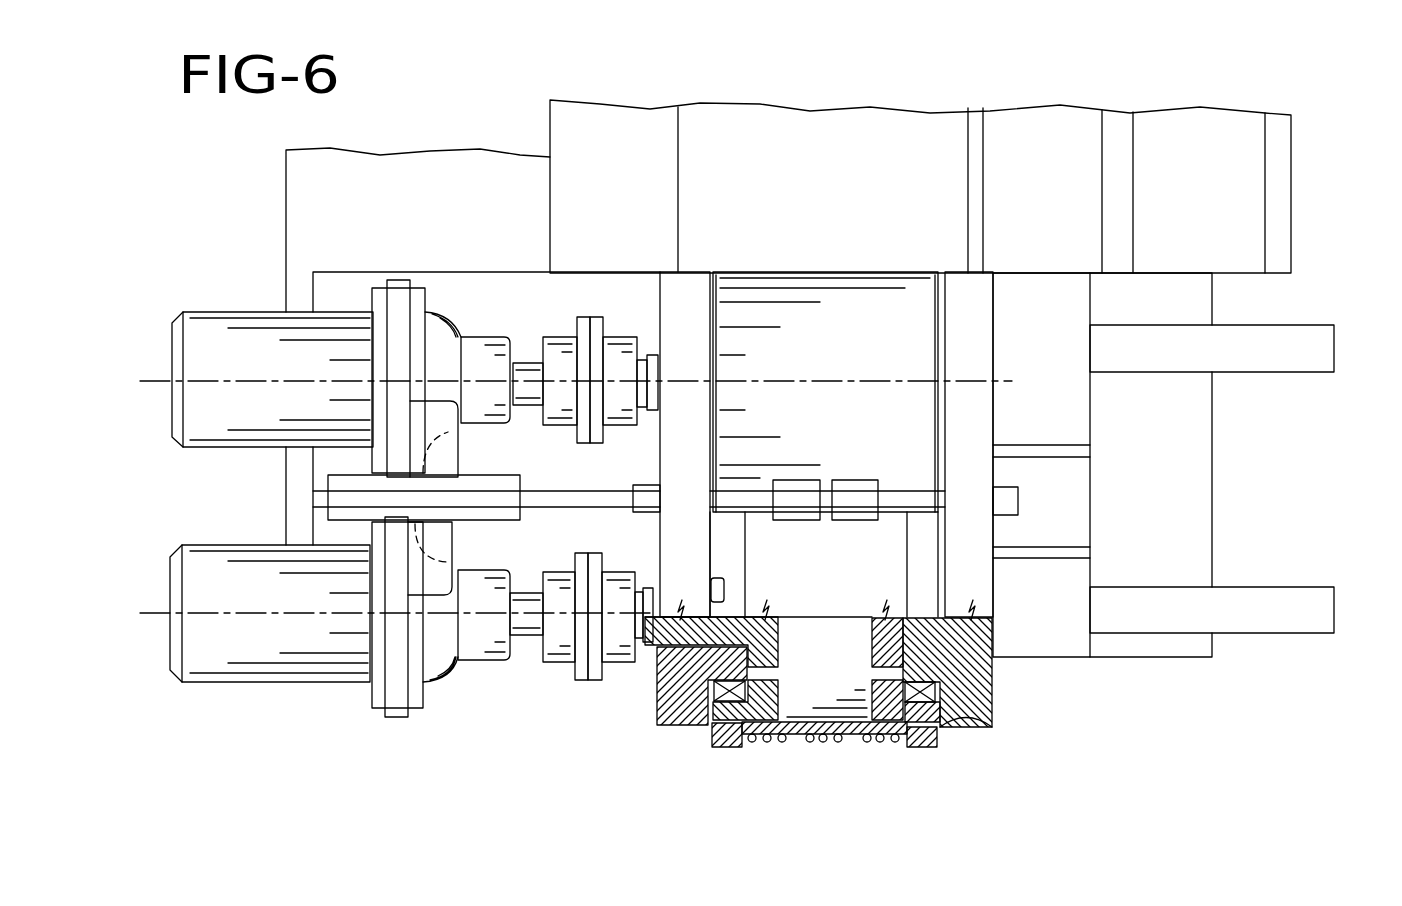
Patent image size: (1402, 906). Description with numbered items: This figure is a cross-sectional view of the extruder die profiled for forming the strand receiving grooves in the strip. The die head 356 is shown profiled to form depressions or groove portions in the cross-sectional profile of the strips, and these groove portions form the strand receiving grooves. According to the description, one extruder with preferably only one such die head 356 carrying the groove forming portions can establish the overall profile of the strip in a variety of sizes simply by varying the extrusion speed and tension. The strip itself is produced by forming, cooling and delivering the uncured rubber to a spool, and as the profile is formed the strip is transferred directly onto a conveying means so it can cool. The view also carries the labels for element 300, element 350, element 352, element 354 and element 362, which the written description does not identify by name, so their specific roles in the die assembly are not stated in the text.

The drive and frame assembly 300 is at (484, 190).
The housing block 350 is at (830, 320).
The flexible web 352 is at (950, 725).
The clamp member 354 is at (752, 743).
The die head 356 is at (782, 742).
The stop member 362 is at (712, 583).